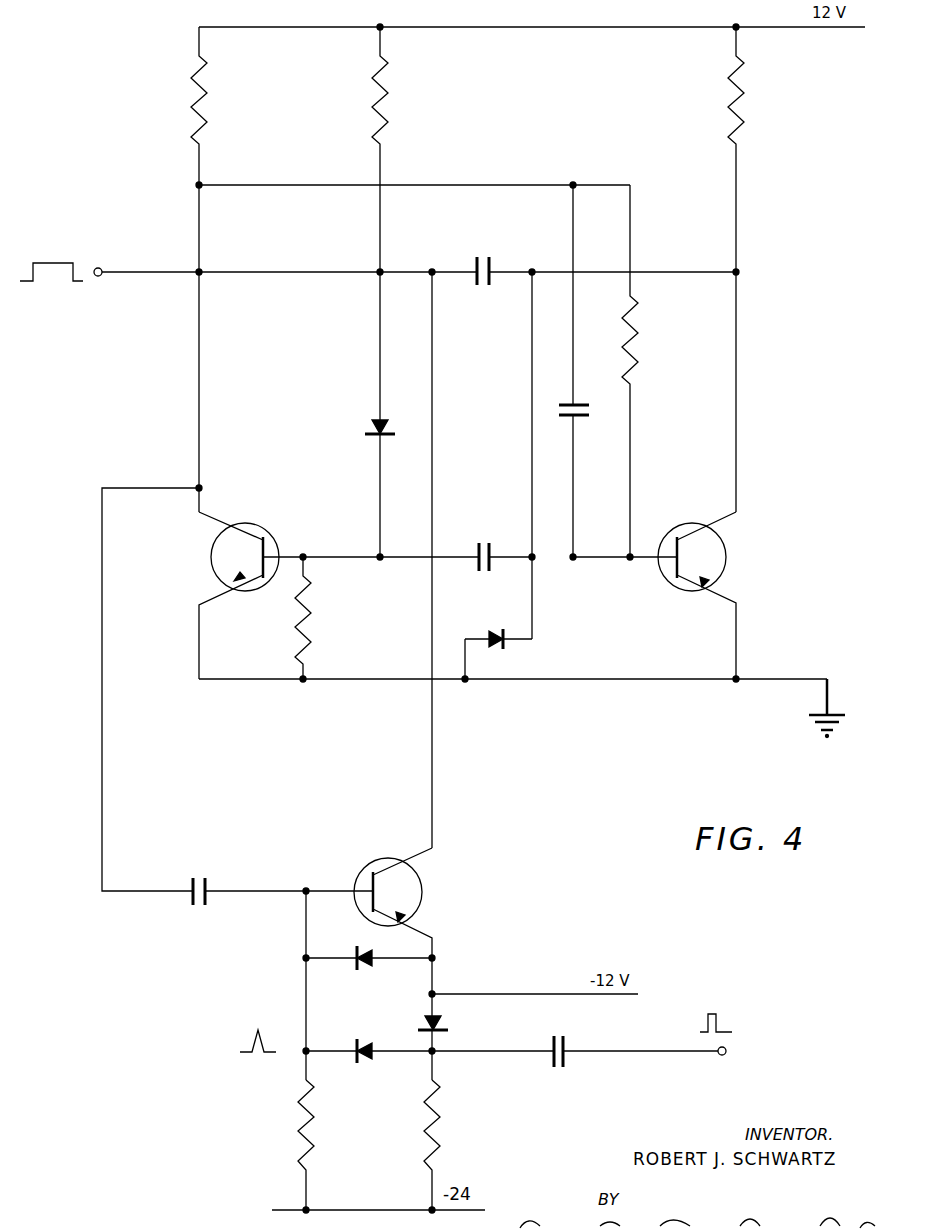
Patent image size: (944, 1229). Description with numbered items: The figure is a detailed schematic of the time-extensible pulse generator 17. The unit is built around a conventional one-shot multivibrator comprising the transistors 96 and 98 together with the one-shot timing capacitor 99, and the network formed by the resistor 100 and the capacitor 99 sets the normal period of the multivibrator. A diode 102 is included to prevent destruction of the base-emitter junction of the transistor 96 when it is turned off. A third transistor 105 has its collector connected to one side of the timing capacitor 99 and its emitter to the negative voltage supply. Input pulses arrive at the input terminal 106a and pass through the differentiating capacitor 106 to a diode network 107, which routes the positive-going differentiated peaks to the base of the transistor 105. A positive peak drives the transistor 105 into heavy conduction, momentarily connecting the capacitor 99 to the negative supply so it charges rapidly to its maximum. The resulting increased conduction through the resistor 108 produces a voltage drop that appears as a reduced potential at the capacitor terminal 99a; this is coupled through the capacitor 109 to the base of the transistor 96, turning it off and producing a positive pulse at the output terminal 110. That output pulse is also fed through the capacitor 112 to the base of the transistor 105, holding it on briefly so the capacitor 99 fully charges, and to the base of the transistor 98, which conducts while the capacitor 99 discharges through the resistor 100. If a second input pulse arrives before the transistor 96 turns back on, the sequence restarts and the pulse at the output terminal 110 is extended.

The time-extensible pulse generator 17 is at (650, 750).
The transistor 96 is at (211, 560).
The transistor 98 is at (727, 557).
The one-shot timing capacitor 99 is at (478, 258).
The capacitor terminal 99a is at (532, 272).
The resistor 100 is at (386, 92).
The diode 102 is at (372, 428).
The third transistor 105 is at (422, 892).
The differentiating capacitor 106 is at (565, 1040).
The input terminal 106a is at (722, 1055).
The diode network 107 is at (455, 1078).
The resistor 108 is at (742, 100).
The capacitor 109 is at (484, 543).
The output terminal 110 is at (98, 268).
The capacitor 112 is at (207, 878).